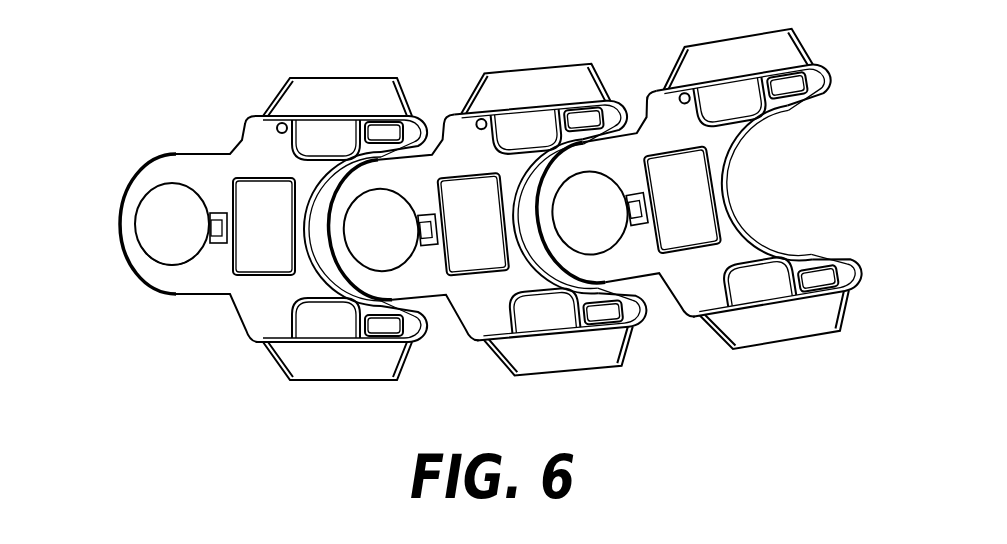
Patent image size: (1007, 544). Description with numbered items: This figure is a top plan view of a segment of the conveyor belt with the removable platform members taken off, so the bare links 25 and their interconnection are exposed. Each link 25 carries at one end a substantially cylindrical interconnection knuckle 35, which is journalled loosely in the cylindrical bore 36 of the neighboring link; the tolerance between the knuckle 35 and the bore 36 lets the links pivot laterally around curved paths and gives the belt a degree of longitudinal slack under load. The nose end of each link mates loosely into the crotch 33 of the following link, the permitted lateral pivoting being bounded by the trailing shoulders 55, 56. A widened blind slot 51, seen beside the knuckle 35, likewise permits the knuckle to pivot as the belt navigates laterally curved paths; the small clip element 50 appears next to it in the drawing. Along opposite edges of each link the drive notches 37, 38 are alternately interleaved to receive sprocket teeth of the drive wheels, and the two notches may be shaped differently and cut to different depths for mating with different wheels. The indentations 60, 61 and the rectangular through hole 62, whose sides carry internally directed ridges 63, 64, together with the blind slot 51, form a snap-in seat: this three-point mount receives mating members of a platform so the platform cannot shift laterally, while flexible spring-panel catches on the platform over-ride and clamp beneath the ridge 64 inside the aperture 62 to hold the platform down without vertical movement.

The link 25 is at (110, 221).
The crotch 33 is at (739, 206).
The interconnection knuckle 35 is at (163, 210).
The cylindrical bore 36 is at (183, 250).
The drive notch 37 is at (522, 124).
The drive notch 38 is at (553, 314).
The retaining clip 50 is at (219, 252).
The widened blind slot 51 is at (220, 212).
The trailing shoulder 55 is at (412, 118).
The trailing shoulder 56 is at (420, 330).
The indentation 60 is at (792, 80).
The indentation 61 is at (822, 277).
The rectangular through hole 62 is at (676, 181).
The internally directed side ridge 63 is at (680, 224).
The internally directed side ridge 64 is at (670, 166).